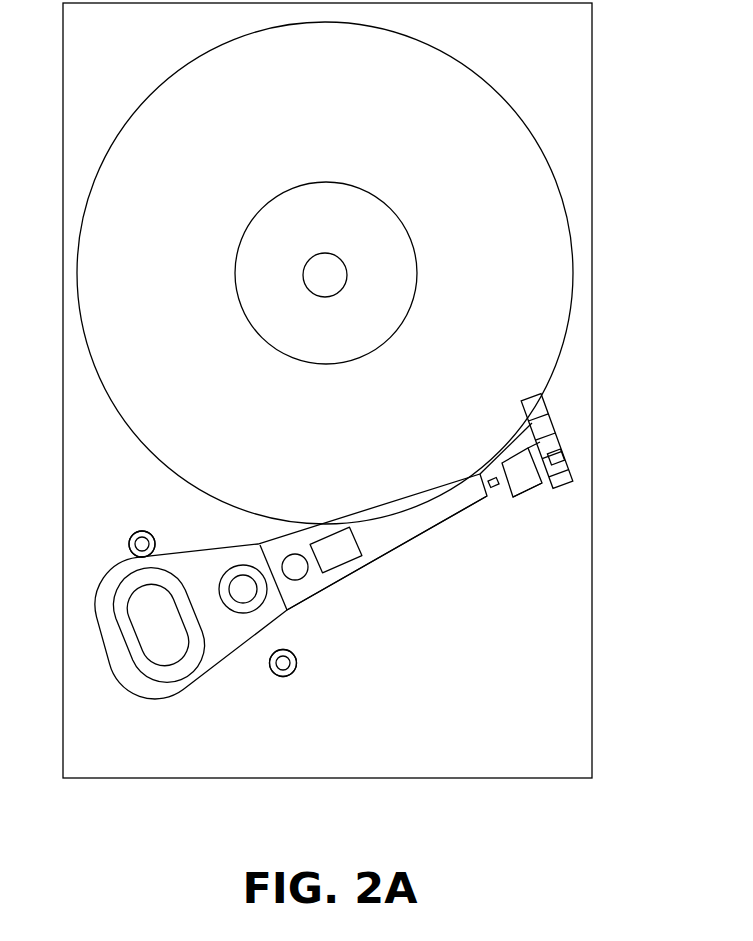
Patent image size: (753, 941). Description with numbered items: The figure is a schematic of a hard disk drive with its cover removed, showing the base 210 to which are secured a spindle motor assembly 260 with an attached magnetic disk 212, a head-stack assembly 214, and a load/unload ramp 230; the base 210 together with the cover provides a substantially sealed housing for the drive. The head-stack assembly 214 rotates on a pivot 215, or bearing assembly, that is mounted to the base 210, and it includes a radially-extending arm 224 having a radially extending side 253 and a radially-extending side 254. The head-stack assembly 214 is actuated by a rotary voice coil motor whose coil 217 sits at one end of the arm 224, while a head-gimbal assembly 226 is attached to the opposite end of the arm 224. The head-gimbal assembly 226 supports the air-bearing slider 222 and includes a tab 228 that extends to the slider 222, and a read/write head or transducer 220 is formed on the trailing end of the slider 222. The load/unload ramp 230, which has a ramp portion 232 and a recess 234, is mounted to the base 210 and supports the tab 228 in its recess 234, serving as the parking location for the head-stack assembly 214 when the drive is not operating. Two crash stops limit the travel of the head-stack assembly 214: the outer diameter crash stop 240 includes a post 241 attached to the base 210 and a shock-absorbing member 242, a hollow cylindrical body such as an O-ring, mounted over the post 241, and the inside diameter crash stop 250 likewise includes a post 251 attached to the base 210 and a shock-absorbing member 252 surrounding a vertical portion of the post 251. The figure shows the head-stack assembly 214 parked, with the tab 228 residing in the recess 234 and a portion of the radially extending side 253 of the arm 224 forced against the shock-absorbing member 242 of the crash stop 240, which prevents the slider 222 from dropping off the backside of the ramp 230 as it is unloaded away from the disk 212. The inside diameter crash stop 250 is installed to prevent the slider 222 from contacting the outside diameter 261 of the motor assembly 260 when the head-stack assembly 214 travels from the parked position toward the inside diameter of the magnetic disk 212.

The base 210 is at (563, 732).
The magnetic disk 212 is at (557, 225).
The head-stack assembly 214 is at (165, 695).
The pivot 215 is at (245, 595).
The coil 217 is at (152, 672).
The read/write head 220 is at (516, 498).
The air-bearing slider 222 is at (542, 484).
The radially-extending arm 224 is at (398, 532).
The head-gimbal assembly 226 is at (487, 497).
The tab 228 is at (566, 450).
The load/unload ramp 230 is at (571, 484).
The ramp portion 232 is at (532, 412).
The recess 234 is at (548, 447).
The outer diameter crash stop 240 is at (120, 524).
The post 241 is at (130, 546).
The shock-absorbing member 242 is at (142, 531).
The inside diameter crash stop 250 is at (302, 651).
The post 251 is at (282, 676).
The shock-absorbing member 252 is at (296, 666).
The radially extending side 253 is at (200, 546).
The radially-extending side 254 is at (448, 522).
The motor assembly 260 is at (353, 211).
The outside diameter 261 is at (411, 310).